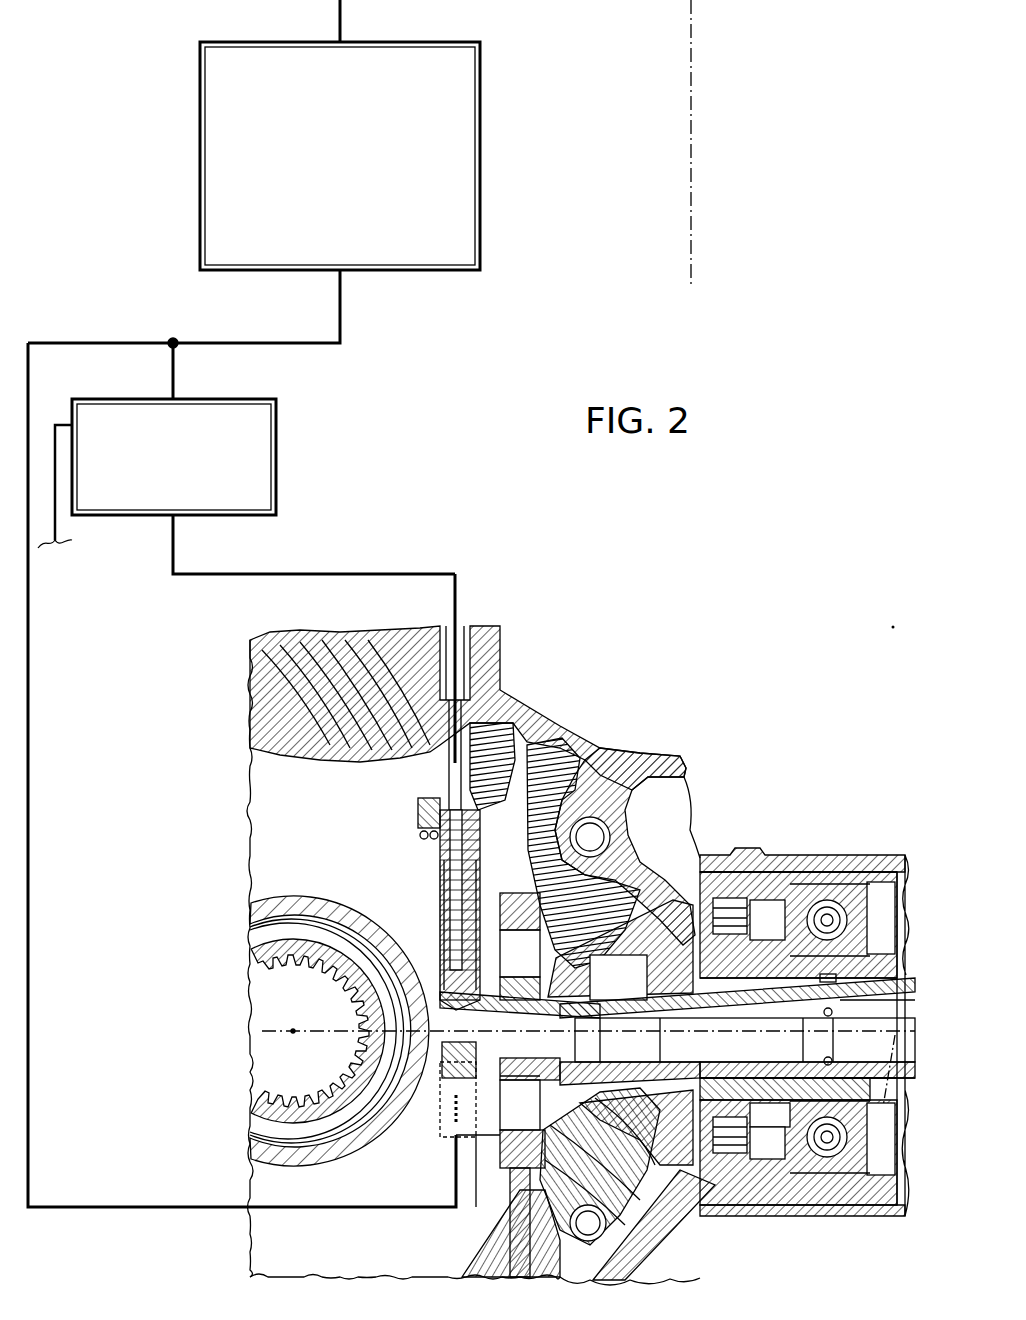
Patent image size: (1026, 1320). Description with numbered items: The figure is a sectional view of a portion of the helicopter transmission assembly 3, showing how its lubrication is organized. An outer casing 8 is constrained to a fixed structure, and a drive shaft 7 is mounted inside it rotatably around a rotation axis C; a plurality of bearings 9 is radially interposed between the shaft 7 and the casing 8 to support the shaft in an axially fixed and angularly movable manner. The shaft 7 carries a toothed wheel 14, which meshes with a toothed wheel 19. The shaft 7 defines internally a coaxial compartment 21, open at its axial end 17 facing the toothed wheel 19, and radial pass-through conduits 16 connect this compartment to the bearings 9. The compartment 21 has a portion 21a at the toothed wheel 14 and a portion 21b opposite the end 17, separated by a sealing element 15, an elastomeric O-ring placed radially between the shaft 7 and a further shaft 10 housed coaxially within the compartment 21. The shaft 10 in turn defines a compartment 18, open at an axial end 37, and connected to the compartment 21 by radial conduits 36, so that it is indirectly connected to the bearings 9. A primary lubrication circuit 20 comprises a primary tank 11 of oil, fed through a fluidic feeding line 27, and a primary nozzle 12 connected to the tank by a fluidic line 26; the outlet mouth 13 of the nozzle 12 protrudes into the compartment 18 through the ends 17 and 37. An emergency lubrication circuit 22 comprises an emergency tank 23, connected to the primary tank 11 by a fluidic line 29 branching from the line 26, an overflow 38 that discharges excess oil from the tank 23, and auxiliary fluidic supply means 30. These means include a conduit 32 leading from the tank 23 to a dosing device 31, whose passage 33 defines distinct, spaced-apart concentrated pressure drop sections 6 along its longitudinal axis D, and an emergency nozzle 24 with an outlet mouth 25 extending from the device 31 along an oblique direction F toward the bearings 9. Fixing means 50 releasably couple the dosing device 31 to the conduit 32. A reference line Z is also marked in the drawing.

The transmission assembly 3 is at (640, 614).
The concentrated pressure drop sections 6 is at (485, 985).
The drive shaft 7 is at (880, 960).
The outer casing 8 is at (720, 880).
The bearings 9 is at (738, 900).
The further shaft 10 is at (867, 1070).
The primary tank 11 is at (401, 228).
The primary nozzle 12 is at (440, 1132).
The outlet mouth 13 is at (545, 1090).
The toothed wheel 14 is at (622, 940).
The sealing element 15 is at (708, 985).
The conduits 16 is at (758, 925).
The axial end 17 is at (462, 1060).
The compartment 18 is at (725, 1058).
The toothed wheel 19 is at (275, 705).
The primary lubrication circuit 20 is at (125, 245).
The compartment 21 is at (668, 1094).
The portion 21a is at (607, 1088).
The portion 21b is at (748, 1088).
The emergency lubrication circuit 22 is at (328, 518).
The emergency lubricating oil tank 23 is at (257, 449).
The emergency nozzle 24 is at (483, 975).
The outlet mouth 25 is at (582, 1013).
The fluidic line 26 is at (30, 678).
The fluidic feeding line 27 is at (341, 12).
The fluidic line 29 is at (175, 368).
The auxiliary fluidic supply means 30 is at (470, 575).
The dosing device 31 is at (425, 853).
The conduit 32 is at (469, 652).
The passage 33 is at (437, 893).
The conduits 36 is at (826, 982).
The axial end 37 is at (522, 993).
The overflow 38 is at (58, 425).
The fixing means 50 is at (413, 808).
The axis Z is at (692, 147).
The longitudinal axis D is at (440, 925).
The direction F is at (516, 1090).
The rotation axis C is at (881, 1096).